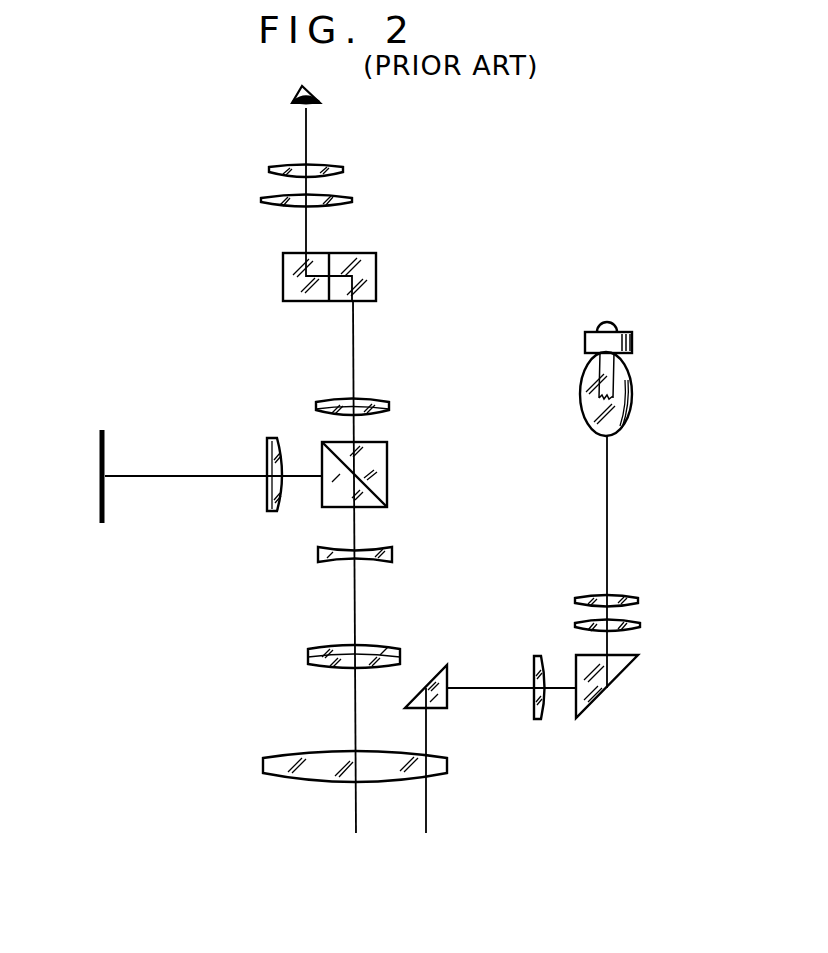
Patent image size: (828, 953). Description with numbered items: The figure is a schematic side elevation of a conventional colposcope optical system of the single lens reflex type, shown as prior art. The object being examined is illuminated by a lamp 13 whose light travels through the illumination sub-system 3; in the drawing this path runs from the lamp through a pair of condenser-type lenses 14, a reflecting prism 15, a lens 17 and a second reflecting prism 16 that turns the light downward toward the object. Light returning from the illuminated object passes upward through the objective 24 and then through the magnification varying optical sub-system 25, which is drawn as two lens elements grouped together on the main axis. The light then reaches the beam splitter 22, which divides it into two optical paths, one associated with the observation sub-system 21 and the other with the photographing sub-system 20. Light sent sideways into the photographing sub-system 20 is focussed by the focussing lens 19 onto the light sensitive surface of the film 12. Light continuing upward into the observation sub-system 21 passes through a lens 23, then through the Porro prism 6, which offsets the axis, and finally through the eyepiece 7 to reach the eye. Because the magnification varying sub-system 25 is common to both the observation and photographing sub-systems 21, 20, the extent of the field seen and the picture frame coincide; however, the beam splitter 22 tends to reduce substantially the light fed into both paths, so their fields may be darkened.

The illumination sub-system 3 is at (592, 547).
The Porro prism 6 is at (287, 270).
The eyepiece 7 is at (257, 163).
The film 12 is at (100, 455).
The lamp 13 is at (622, 391).
The condenser lens 14 is at (642, 590).
The reflecting prism 15 is at (615, 673).
The reflecting prism 16 is at (442, 702).
The lens 17 is at (540, 713).
The focussing lens 19 is at (267, 502).
The photographing sub-system 20 is at (196, 459).
The observation sub-system 21 is at (383, 162).
The beam splitter 22 is at (387, 455).
The lens 23 is at (318, 408).
The objective 24 is at (312, 776).
The magnification varying optical sub-system 25 is at (305, 545).